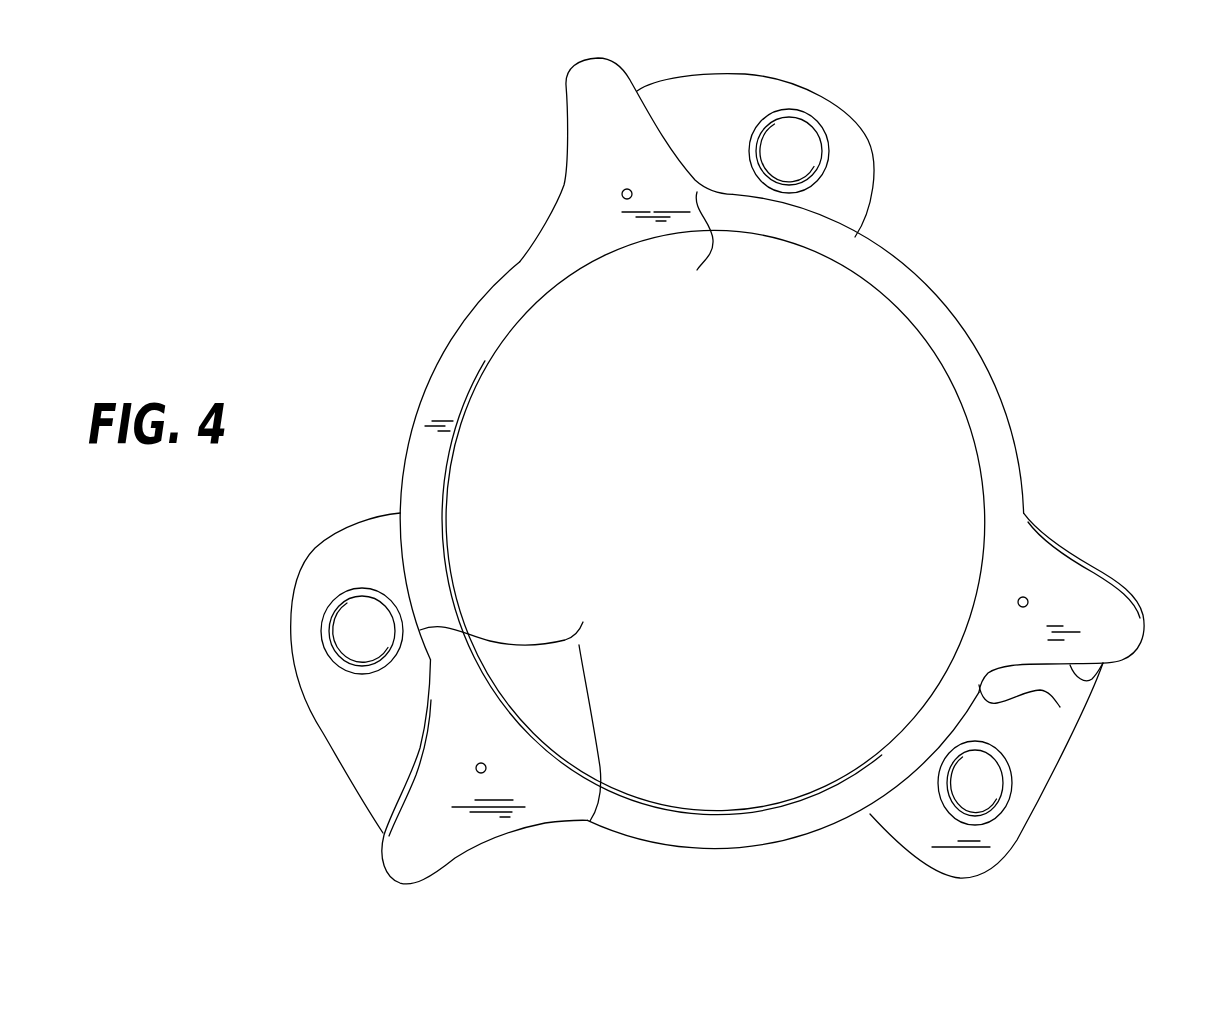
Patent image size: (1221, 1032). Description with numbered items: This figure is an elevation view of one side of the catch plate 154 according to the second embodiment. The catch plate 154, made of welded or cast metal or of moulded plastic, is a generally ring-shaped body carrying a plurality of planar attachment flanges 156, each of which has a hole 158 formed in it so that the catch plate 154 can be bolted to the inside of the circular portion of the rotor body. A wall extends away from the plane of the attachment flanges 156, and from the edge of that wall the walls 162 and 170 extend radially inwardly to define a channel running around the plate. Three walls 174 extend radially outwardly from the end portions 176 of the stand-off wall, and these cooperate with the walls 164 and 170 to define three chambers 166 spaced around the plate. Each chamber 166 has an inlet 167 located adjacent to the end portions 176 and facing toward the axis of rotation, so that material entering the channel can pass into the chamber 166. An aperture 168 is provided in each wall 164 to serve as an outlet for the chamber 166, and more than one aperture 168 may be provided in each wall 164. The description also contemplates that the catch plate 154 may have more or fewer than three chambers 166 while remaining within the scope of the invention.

The catch plate 154 is at (1040, 342).
The attachment flange 156 is at (855, 188).
The hole 158 is at (797, 157).
The wall 162 is at (888, 290).
The wall 164 is at (594, 127).
The chamber 166 is at (636, 252).
The inlet 167 is at (607, 272).
The aperture 168 is at (628, 189).
The wall 170 is at (923, 392).
The wall 174 is at (657, 145).
The end portion 176 is at (546, 220).